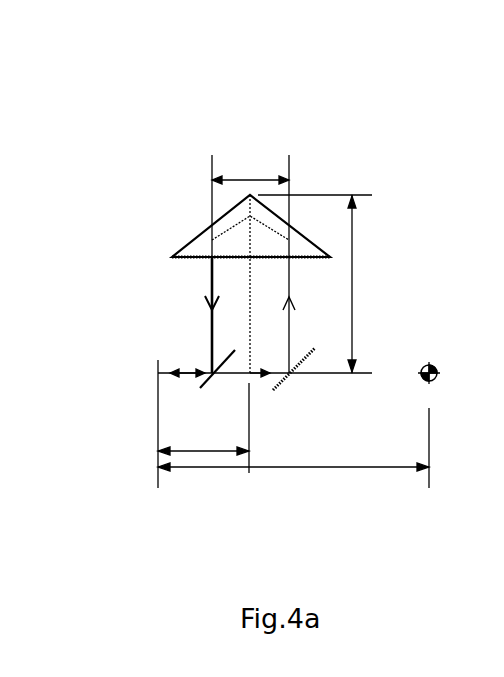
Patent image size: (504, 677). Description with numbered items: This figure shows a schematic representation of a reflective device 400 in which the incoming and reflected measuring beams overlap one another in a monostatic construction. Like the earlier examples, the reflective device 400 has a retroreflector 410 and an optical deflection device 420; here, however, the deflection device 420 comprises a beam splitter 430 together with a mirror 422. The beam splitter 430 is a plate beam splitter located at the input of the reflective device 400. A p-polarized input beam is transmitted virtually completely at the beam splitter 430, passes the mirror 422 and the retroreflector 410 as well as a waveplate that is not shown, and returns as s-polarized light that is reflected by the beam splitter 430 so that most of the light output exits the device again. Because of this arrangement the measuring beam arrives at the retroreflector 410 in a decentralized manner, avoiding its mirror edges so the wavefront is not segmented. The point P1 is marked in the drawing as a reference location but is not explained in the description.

The reflective device 400 is at (303, 121).
The retroreflector 410 is at (207, 233).
The optical deflection device 420 is at (162, 320).
The mirror 422 is at (280, 385).
The beam splitter 430 is at (203, 380).
The point P1 is at (449, 391).